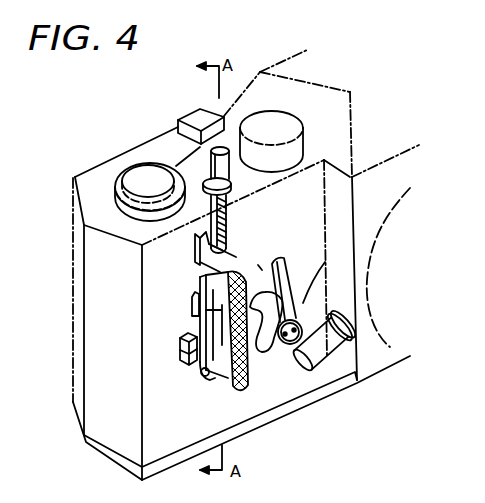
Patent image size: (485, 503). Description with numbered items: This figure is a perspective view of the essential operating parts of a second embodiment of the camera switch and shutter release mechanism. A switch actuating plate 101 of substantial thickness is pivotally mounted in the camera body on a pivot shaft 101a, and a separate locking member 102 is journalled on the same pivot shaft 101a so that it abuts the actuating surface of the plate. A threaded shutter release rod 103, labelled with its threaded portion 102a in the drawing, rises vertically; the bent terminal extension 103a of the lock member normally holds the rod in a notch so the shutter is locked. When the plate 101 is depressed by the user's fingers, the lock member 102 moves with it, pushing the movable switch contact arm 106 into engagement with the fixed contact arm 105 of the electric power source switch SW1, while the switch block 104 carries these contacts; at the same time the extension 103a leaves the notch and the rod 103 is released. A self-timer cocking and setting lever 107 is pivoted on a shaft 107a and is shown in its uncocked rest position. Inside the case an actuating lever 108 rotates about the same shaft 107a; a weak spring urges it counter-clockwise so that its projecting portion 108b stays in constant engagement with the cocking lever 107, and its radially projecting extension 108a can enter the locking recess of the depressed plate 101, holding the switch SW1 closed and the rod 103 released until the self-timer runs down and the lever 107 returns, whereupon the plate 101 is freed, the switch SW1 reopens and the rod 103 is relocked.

The actuating plate 101 is at (241, 274).
The pivot shaft 101a is at (204, 381).
The locking member 102 is at (193, 257).
The threaded portion 102a is at (227, 221).
The shutter release rod 103 is at (228, 188).
The bent terminal extension 103a is at (226, 245).
The switch block 104 is at (184, 362).
The fixed contact arm 105 is at (192, 309).
The movable switch contact arm 106 is at (184, 336).
The cocking and setting lever 107 is at (283, 272).
The shaft 107a is at (300, 305).
The actuating lever 108 is at (266, 341).
The radially projecting extension portion 108a is at (262, 262).
The projecting portion 108b is at (325, 262).
The electric power source switch SW1 is at (158, 332).